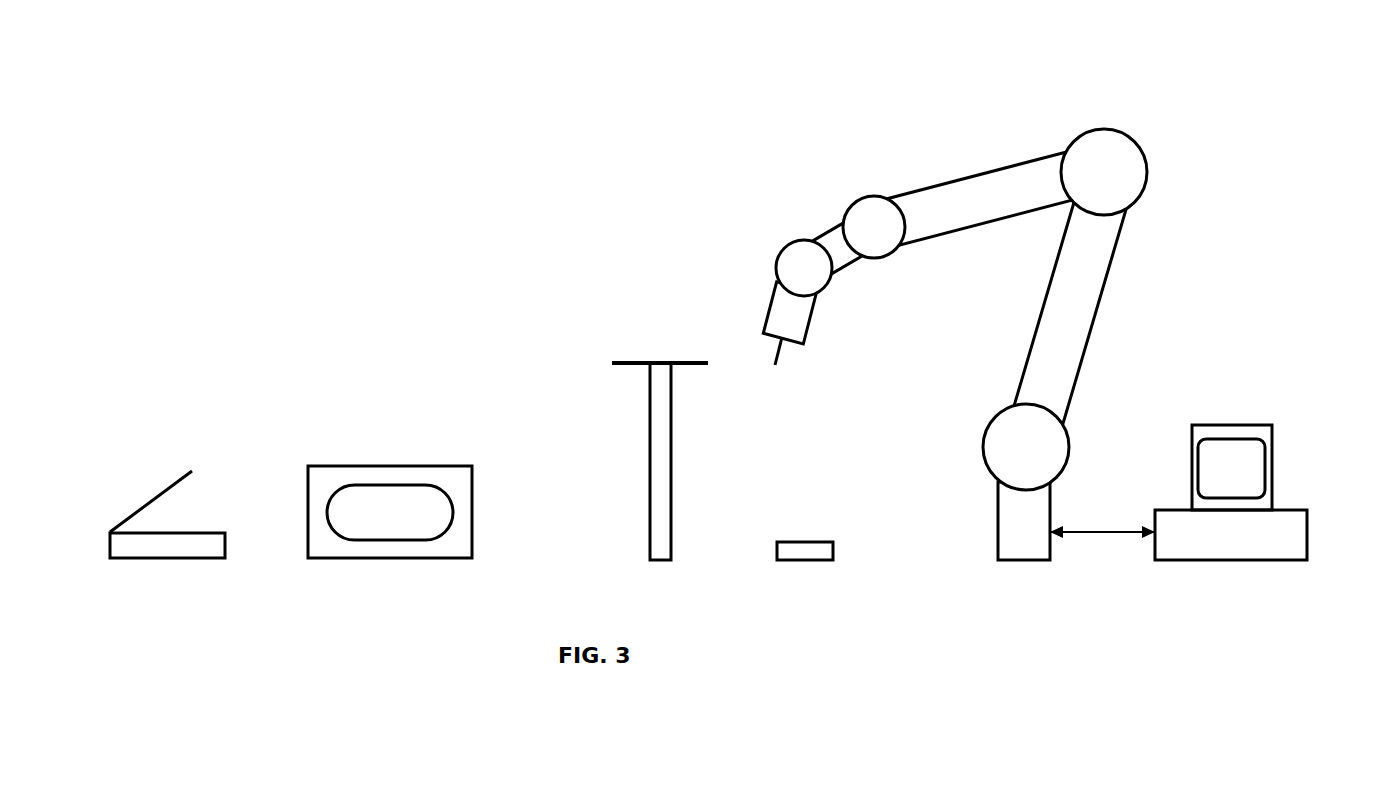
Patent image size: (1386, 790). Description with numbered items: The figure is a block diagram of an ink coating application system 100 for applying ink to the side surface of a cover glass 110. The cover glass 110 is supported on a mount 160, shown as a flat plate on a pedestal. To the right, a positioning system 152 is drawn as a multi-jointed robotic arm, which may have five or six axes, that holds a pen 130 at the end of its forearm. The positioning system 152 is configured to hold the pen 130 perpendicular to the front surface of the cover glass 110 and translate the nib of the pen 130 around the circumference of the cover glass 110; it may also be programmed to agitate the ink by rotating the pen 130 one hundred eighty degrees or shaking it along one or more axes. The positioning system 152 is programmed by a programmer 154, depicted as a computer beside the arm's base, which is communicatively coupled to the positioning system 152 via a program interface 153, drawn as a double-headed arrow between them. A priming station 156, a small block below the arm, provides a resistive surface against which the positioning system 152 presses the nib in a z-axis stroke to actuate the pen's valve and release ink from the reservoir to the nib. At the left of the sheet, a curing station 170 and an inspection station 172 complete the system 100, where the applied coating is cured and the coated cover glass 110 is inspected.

The ink coating application system 100 is at (504, 112).
The cover glass 110 is at (612, 363).
The pen 130 is at (783, 348).
The positioning system 152 is at (962, 344).
The program interface 153 is at (1085, 533).
The programmer 154 is at (1267, 560).
The priming station 156 is at (818, 560).
The mount 160 is at (671, 505).
The curing station 170 is at (455, 558).
The inspection station 172 is at (203, 558).